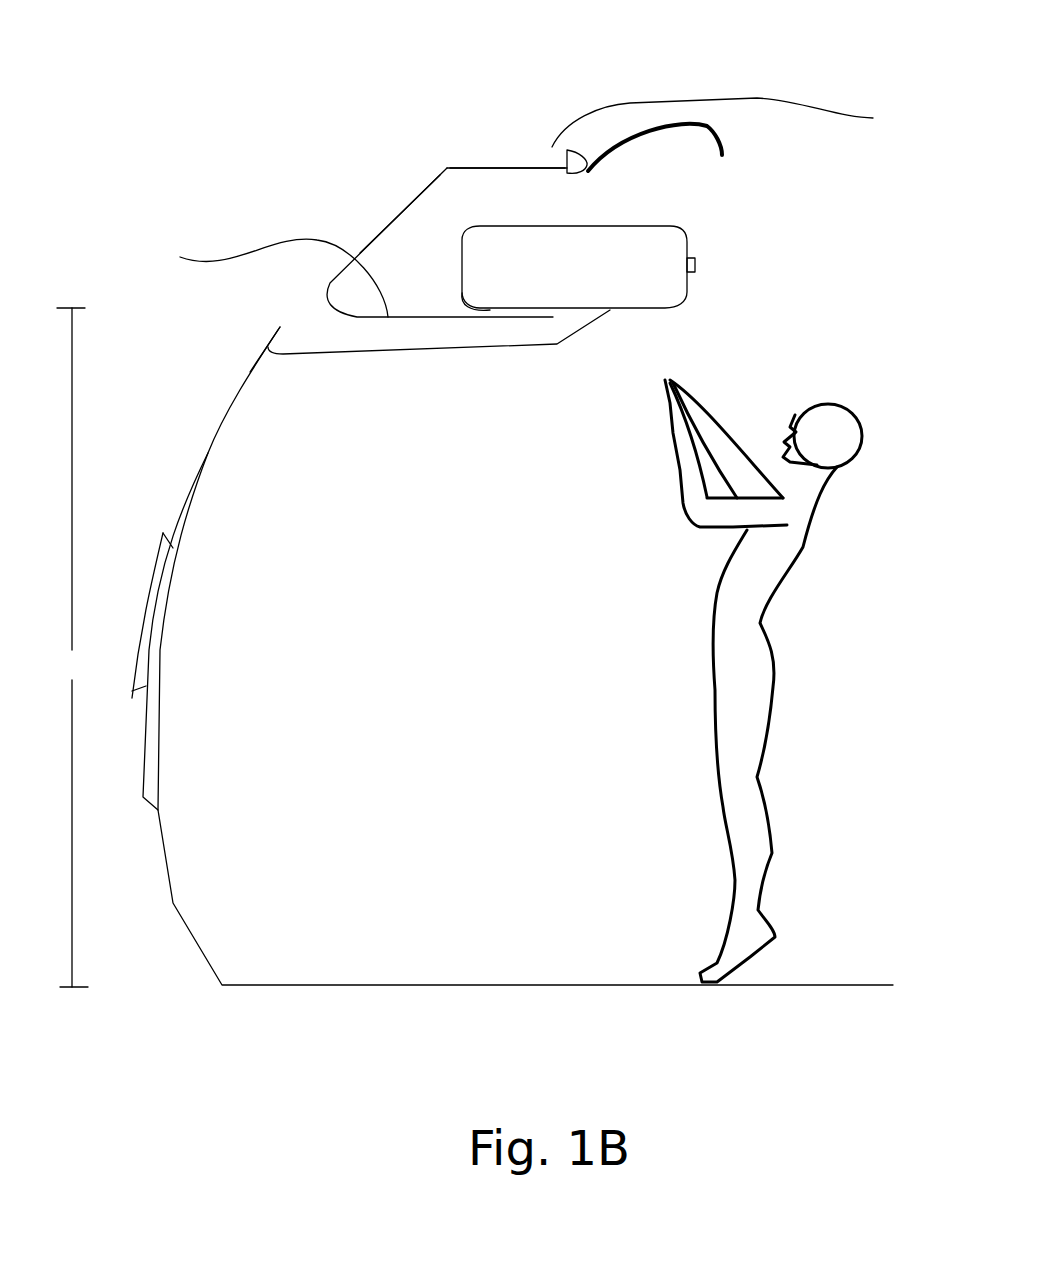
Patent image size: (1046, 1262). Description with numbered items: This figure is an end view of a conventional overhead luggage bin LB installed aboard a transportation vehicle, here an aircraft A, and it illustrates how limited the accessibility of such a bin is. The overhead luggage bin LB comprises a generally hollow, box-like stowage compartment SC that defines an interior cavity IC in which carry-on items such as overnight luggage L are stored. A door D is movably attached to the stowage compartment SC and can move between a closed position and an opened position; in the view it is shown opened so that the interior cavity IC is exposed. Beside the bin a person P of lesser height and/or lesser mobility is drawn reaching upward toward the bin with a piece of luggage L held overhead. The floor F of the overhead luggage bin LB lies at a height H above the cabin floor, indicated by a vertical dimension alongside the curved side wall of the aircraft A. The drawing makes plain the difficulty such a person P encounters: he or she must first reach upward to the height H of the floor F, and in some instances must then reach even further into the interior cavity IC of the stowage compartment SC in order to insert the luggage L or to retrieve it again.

The overhead luggage bin LB is at (398, 148).
The stowage compartment SC is at (390, 198).
The interior cavity IC is at (530, 188).
The floor F is at (270, 278).
The door D is at (720, 140).
The luggage L is at (663, 293).
The height H is at (72, 647).
The aircraft A is at (292, 753).
The person P is at (708, 652).